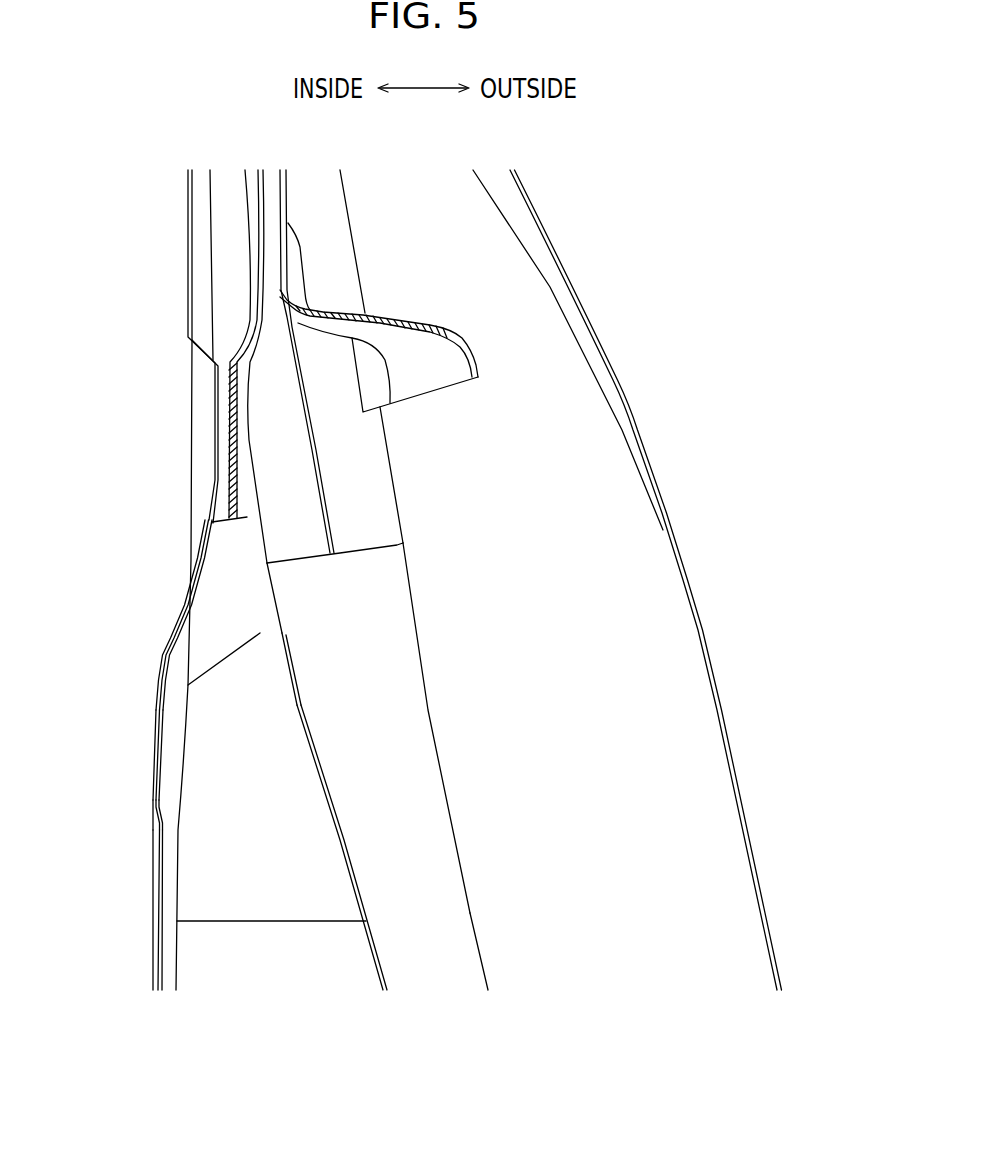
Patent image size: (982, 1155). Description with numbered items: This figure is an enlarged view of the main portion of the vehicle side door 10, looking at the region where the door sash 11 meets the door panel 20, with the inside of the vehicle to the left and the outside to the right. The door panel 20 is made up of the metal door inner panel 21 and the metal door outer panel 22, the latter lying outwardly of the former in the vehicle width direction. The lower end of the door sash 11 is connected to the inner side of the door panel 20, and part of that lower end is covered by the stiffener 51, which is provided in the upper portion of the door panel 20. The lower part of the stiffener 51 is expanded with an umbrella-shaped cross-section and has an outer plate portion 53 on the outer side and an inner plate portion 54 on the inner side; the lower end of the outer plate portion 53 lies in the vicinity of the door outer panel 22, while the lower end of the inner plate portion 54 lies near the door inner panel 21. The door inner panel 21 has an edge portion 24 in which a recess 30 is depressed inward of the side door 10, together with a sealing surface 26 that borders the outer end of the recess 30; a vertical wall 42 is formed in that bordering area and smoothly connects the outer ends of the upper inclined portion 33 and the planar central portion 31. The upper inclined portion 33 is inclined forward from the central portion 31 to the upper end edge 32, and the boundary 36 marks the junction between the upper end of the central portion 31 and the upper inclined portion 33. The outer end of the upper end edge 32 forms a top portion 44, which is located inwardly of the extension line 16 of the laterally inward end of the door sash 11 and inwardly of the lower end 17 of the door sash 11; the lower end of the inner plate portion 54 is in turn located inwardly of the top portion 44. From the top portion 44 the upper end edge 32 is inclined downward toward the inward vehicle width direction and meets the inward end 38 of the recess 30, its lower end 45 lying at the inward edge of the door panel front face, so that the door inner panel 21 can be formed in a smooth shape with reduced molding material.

The vehicle side door 10 is at (613, 210).
The door sash 11 is at (395, 480).
The extension line 16 is at (266, 593).
The lower end of the door sash 17 is at (313, 560).
The door panel 20 is at (700, 617).
The door inner panel 21 is at (190, 710).
The door outer panel 22 is at (713, 673).
The edge portion 24 is at (505, 1013).
The sealing surface 26 is at (443, 913).
The recess 30 is at (220, 857).
The central portion 31 is at (210, 962).
The upper end edge 32 is at (220, 657).
The upper inclined portion 33 is at (225, 807).
The boundary 36 is at (245, 920).
The inward end of the recess 38 is at (198, 705).
The vertical wall 42 is at (388, 962).
The top portion 44 is at (260, 633).
The lower end of the inclined edge 45 is at (187, 685).
The stiffener 51 is at (457, 324).
The outer plate portion 53 is at (477, 353).
The inner plate portion 54 is at (228, 468).